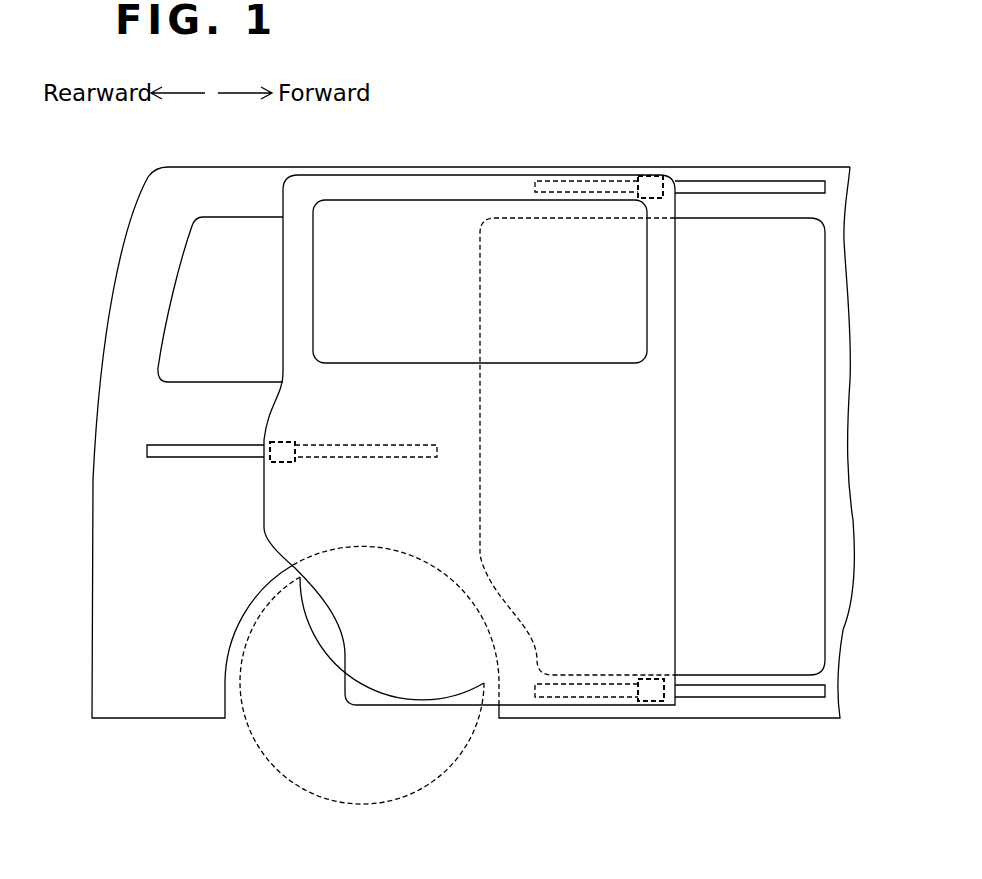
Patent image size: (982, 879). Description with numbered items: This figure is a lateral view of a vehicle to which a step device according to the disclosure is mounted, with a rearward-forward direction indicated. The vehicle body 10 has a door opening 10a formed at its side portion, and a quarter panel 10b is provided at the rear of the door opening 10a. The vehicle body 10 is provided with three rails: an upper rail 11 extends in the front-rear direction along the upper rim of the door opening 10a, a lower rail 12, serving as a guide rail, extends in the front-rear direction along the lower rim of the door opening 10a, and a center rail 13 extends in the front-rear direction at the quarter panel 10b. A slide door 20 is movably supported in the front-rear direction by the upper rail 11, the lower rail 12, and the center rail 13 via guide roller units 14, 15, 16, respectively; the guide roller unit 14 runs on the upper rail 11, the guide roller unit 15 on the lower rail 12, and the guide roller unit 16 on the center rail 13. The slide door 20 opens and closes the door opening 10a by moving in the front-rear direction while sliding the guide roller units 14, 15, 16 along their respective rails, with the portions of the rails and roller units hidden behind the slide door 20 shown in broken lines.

The vehicle body 10 is at (282, 166).
The door opening 10a is at (823, 449).
The quarter panel 10b is at (205, 384).
The upper rail 11 is at (701, 184).
The lower rail 12 is at (722, 685).
The center rail 13 is at (177, 445).
The guide roller unit 14 is at (647, 172).
The guide roller unit 15 is at (647, 679).
The guide roller unit 16 is at (287, 441).
The slide door 20 is at (399, 179).